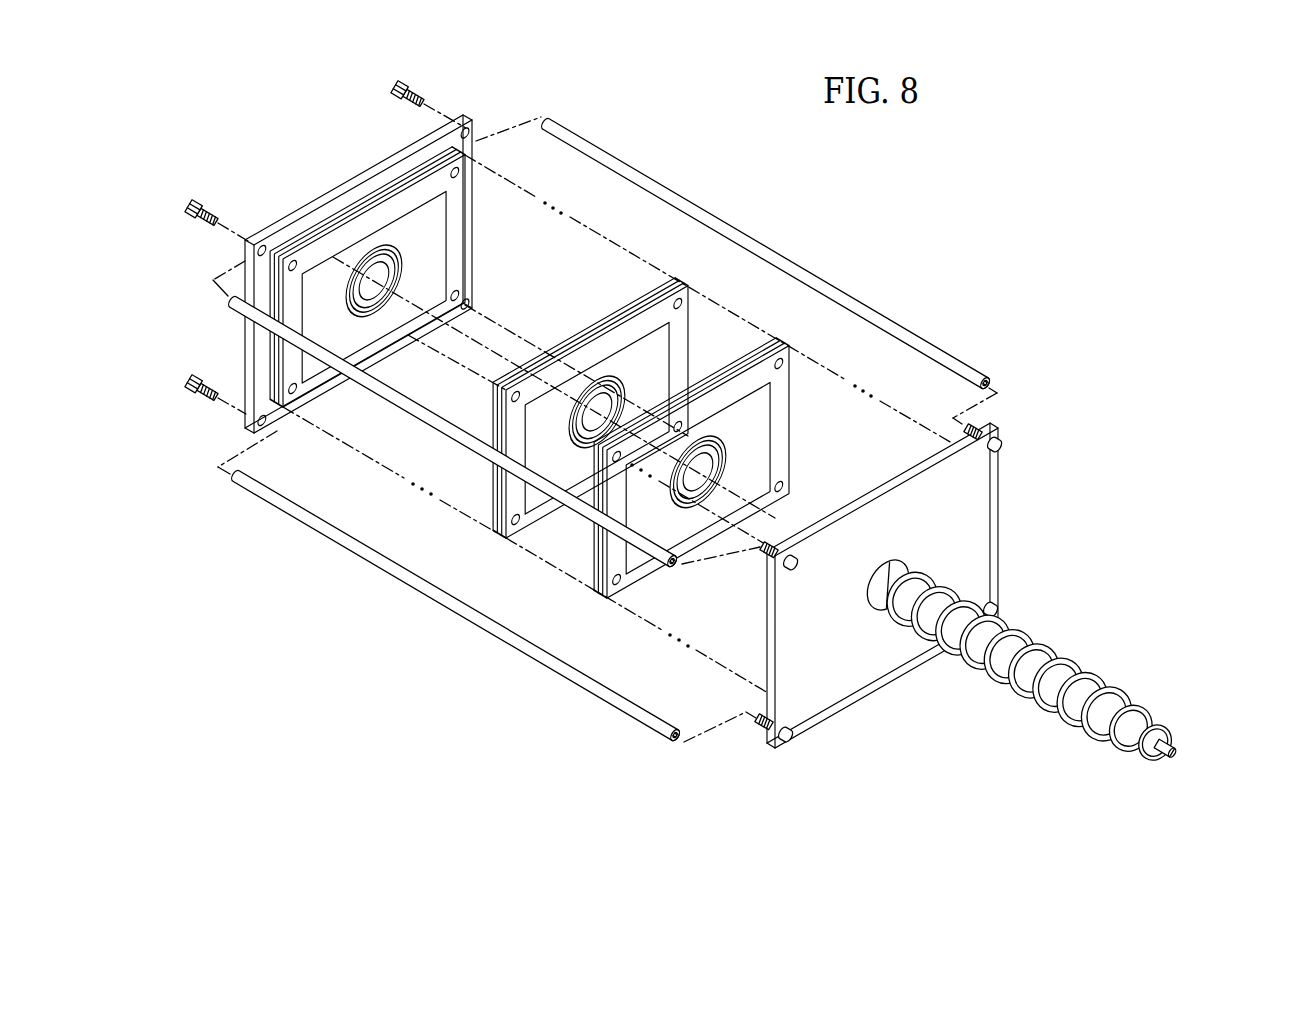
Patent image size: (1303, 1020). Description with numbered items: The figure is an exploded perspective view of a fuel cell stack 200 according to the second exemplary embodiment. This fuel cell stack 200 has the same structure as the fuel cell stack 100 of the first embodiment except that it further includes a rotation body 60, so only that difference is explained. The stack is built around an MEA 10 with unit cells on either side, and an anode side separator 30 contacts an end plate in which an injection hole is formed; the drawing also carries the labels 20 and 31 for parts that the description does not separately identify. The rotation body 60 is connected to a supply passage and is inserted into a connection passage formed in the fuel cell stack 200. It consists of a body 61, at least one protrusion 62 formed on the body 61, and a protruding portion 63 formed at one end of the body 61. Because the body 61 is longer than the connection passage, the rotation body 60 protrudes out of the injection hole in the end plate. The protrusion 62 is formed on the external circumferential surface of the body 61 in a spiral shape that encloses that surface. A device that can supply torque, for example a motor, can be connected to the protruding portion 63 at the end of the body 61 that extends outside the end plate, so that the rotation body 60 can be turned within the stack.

The MEA 10 is at (375, 195).
The gasket 20 is at (343, 207).
The anode side separator 30 is at (293, 216).
The connecting rod 31 is at (887, 323).
The rotation body 60 is at (1125, 677).
The body 61 is at (1118, 756).
The protrusion 62 is at (1133, 707).
The protruding portion 63 is at (1178, 756).
The fuel cell stack 100 is at (824, 252).
The fuel cell stack 200 is at (758, 141).